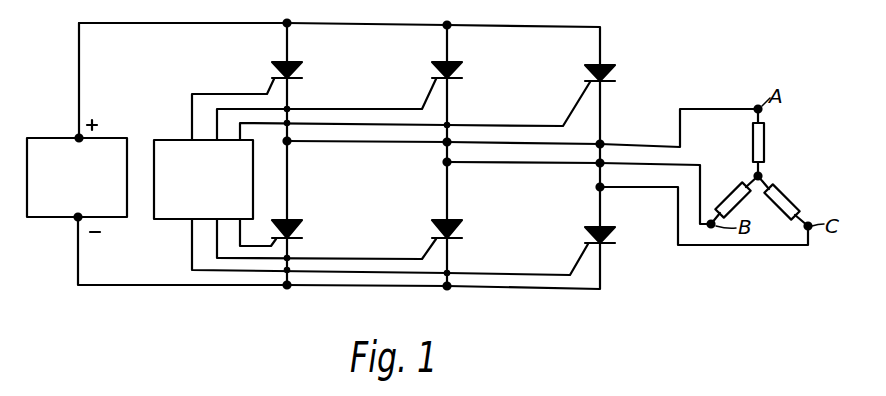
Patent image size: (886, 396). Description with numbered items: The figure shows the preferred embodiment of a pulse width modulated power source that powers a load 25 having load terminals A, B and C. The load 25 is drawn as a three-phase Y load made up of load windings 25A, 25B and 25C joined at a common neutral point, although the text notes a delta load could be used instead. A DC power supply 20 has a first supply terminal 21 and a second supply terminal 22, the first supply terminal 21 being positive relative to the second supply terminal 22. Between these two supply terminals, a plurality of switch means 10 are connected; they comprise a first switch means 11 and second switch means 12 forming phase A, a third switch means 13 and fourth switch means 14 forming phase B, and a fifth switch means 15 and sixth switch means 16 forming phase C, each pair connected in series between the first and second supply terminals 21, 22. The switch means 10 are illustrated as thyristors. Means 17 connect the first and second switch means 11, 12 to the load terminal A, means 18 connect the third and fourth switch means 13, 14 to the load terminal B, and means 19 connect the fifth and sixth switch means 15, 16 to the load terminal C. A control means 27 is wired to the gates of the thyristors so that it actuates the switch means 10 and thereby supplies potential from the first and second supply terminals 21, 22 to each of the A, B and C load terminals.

The switch means 10 is at (383, 82).
The first switch means 11 is at (290, 62).
The second switch means 12 is at (300, 220).
The third switch means 13 is at (450, 62).
The fourth switch means 14 is at (437, 220).
The fifth switch means 15 is at (606, 65).
The sixth switch means 16 is at (595, 226).
The means connecting the first and second switch means to load terminal A 17 is at (417, 143).
The means connecting the third and fourth switch means to load terminal B 18 is at (540, 163).
The means connecting the fifth and sixth switch means to load terminal C 19 is at (642, 188).
The power supply 20 is at (122, 138).
The first supply terminal 21 is at (79, 136).
The second supply terminal 22 is at (78, 221).
The load 25 is at (818, 137).
The load winding 25A is at (766, 148).
The load winding 25B is at (729, 198).
The load winding 25C is at (792, 204).
The control means 27 is at (176, 220).